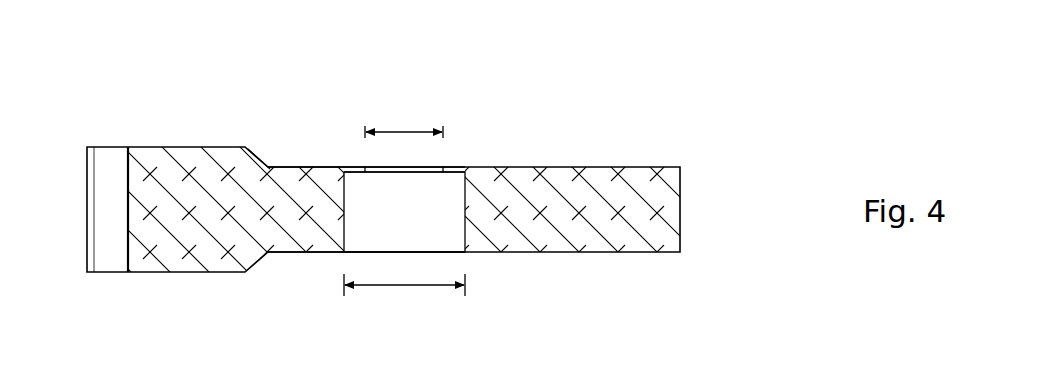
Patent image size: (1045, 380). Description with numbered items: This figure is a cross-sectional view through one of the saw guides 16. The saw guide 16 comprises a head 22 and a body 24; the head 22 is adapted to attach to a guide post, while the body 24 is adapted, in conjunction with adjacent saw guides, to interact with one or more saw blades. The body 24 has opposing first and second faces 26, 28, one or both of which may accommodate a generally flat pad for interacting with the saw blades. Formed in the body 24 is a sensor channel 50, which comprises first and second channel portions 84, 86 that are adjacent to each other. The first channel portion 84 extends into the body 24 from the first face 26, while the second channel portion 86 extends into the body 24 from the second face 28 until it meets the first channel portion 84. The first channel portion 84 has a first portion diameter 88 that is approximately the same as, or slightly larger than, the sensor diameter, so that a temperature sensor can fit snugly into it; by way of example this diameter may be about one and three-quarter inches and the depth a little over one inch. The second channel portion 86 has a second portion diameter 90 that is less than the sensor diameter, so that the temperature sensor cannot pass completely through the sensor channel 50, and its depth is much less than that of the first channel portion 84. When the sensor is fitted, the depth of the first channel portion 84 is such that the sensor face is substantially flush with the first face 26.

The saw guide 16 is at (660, 102).
The head 22 is at (192, 175).
The body 24 is at (585, 193).
The first face 26 is at (302, 253).
The second face 28 is at (303, 170).
The sensor channel 50 is at (371, 217).
The first channel portion 84 is at (445, 233).
The second channel portion 86 is at (425, 168).
The first portion diameter 88 is at (404, 291).
The second portion diameter 90 is at (404, 123).